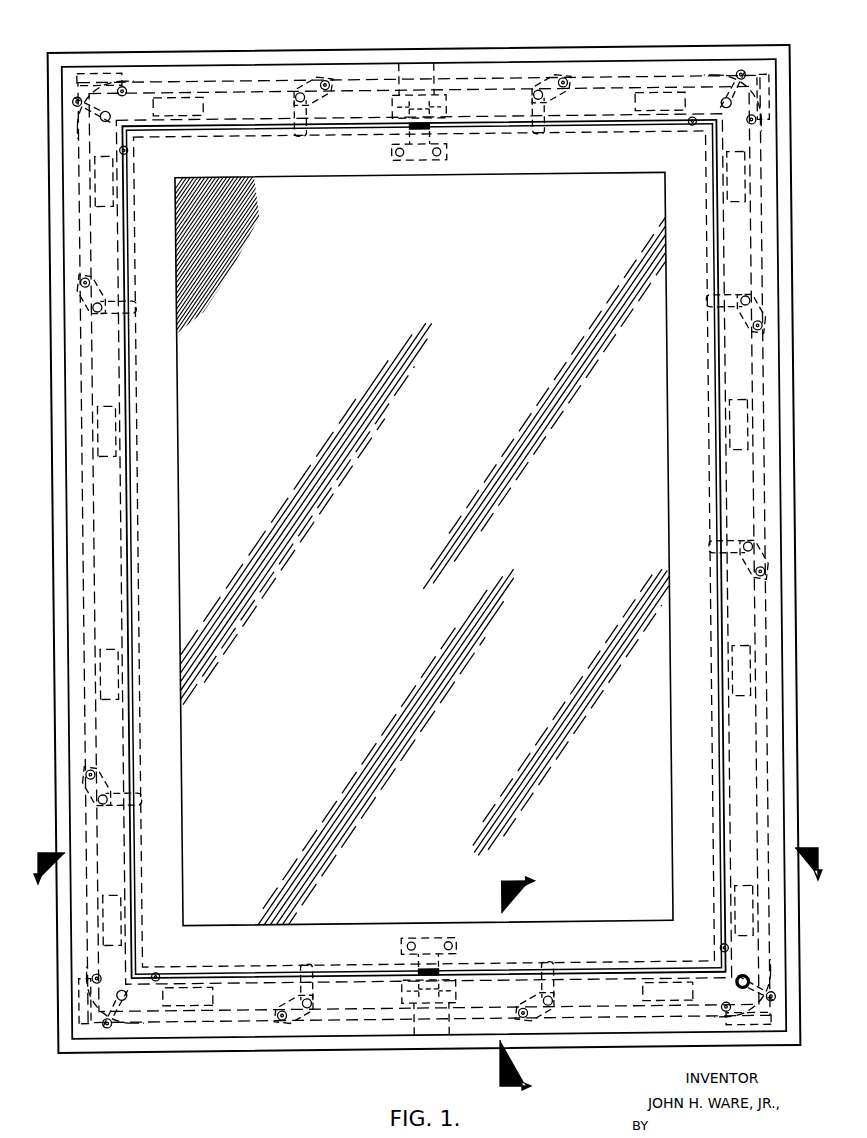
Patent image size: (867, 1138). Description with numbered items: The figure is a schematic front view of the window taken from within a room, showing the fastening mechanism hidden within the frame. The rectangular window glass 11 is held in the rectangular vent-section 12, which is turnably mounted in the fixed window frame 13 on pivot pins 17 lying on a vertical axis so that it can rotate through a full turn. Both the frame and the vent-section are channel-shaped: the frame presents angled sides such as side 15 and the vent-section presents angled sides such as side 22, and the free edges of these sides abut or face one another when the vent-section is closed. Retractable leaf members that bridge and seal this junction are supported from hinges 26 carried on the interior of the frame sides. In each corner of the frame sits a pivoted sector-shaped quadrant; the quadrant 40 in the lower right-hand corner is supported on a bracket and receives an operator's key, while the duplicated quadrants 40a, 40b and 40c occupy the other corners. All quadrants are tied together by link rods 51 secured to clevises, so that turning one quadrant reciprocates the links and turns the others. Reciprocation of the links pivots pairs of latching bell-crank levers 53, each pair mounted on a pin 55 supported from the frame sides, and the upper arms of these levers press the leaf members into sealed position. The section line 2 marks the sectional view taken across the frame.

The window glass 11 is at (400, 352).
The vent-section 12 is at (320, 180).
The fixed window frame 13 is at (206, 52).
The angled side of frame 15 is at (585, 105).
The pivot pin 17 is at (440, 100).
The angled side of vent-section 22 is at (550, 165).
The hinge 26 is at (652, 95).
The quadrant 40 is at (776, 1032).
The quadrant 40a is at (76, 1040).
The quadrant 40b is at (120, 85).
The quadrant 40c is at (770, 62).
The link rod 51 is at (360, 80).
The latching bell-crank lever 53 is at (302, 92).
The pin 55 is at (94, 314).
The section line 2- 2 is at (428, 879).